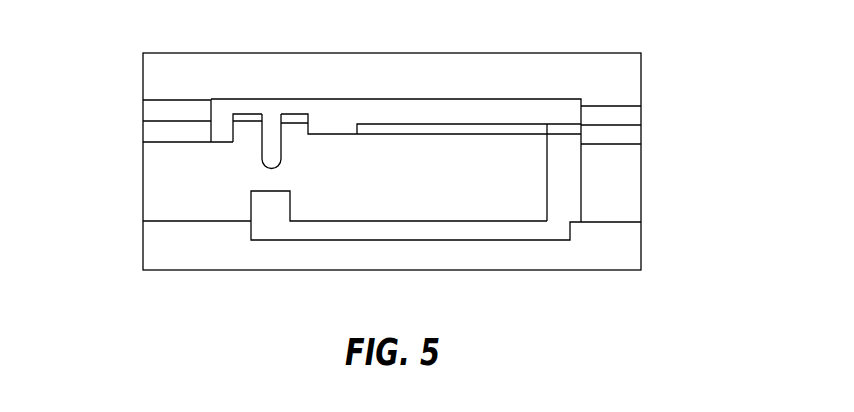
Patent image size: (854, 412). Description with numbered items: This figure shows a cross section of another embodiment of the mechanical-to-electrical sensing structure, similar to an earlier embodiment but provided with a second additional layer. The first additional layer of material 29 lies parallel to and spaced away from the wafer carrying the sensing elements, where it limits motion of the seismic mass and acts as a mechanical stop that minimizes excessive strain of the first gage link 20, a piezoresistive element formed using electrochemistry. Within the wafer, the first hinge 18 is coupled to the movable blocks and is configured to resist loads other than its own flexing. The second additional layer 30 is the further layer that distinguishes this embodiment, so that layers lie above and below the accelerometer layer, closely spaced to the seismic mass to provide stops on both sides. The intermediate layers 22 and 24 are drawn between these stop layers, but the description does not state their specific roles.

The first additional layer of material 29 is at (152, 70).
The upper layer 22 is at (632, 117).
The lower layer 24 is at (632, 134).
The first gage link 20 is at (271, 120).
The first hinge 18 is at (268, 163).
The substrate 30 is at (630, 247).